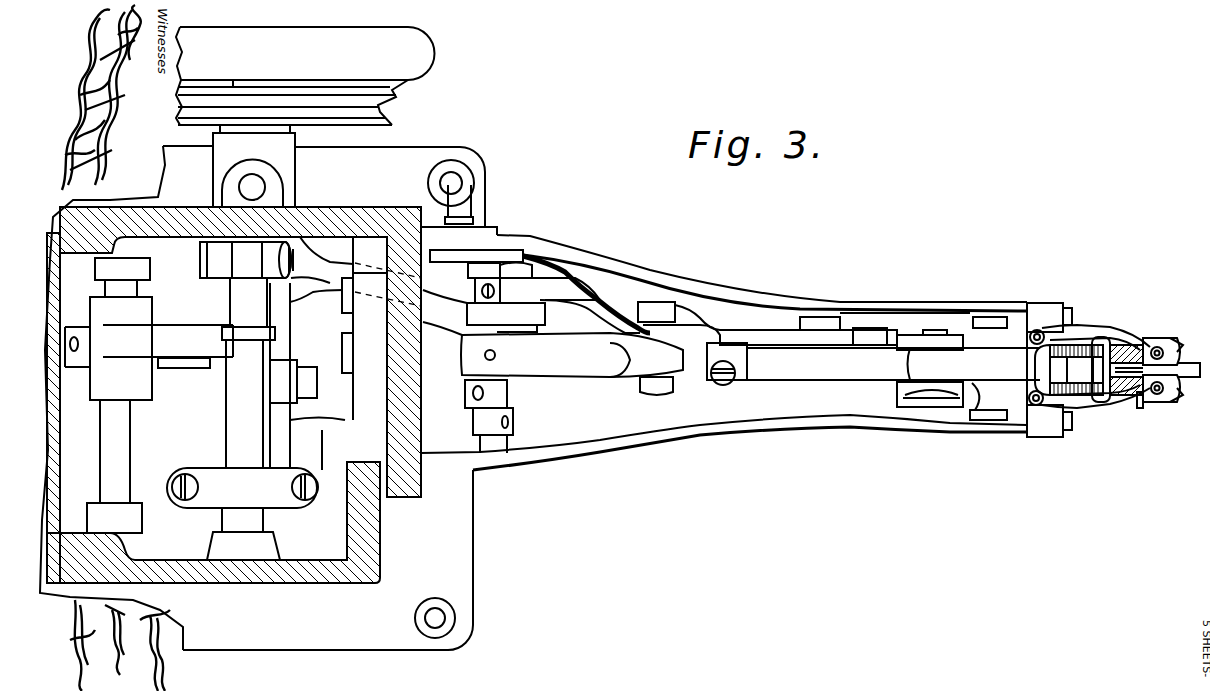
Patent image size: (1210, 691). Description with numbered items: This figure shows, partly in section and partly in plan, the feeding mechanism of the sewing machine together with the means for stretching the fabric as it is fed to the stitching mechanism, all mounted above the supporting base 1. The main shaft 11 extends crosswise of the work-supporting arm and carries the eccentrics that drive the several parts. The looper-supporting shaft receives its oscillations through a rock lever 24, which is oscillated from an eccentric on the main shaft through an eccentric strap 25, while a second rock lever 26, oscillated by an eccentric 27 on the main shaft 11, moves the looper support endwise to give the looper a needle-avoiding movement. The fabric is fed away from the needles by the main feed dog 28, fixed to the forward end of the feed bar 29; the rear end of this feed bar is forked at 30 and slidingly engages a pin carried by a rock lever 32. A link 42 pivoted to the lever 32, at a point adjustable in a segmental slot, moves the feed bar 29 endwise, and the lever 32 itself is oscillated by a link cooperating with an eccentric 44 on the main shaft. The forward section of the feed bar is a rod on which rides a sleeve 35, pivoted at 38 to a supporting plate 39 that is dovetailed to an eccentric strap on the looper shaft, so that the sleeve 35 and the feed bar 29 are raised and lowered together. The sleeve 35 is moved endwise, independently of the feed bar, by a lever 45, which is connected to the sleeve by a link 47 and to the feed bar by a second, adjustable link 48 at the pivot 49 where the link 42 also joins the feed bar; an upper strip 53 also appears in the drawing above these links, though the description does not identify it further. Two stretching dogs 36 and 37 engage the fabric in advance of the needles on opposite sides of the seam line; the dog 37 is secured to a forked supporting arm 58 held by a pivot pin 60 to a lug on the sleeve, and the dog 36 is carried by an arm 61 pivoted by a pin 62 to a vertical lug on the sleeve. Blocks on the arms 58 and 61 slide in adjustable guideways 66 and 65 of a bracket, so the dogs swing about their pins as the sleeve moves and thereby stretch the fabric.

The supporting base 1 is at (300, 650).
The main shaft 11 is at (230, 432).
The rock lever 24 is at (283, 440).
The eccentric strap 25 is at (247, 500).
The rock lever 26 is at (155, 310).
The eccentric 27 is at (237, 363).
The main feed dog 28 is at (1067, 350).
The feed bar 29 is at (1022, 415).
The forked rear end 30 is at (508, 360).
The rock lever 32 is at (538, 317).
The sleeve 35 is at (833, 372).
The stretching dog 36 is at (1132, 348).
The stretching dog 37 is at (723, 386).
The pivot 38 is at (938, 407).
The supporting plate 39 is at (905, 407).
The link 42 is at (588, 292).
The eccentric 44 is at (255, 248).
The lever 45 is at (807, 323).
The link 47 is at (842, 335).
The second link 48 is at (728, 330).
The pivot 49 is at (667, 303).
The upper strip 53 is at (553, 265).
The supporting arm 58 is at (1107, 407).
The pivot pin 60 is at (1038, 405).
The arm 61 is at (1100, 332).
The pin 62 is at (1037, 330).
The guideway 65 is at (1167, 350).
The guideway 66 is at (1167, 400).